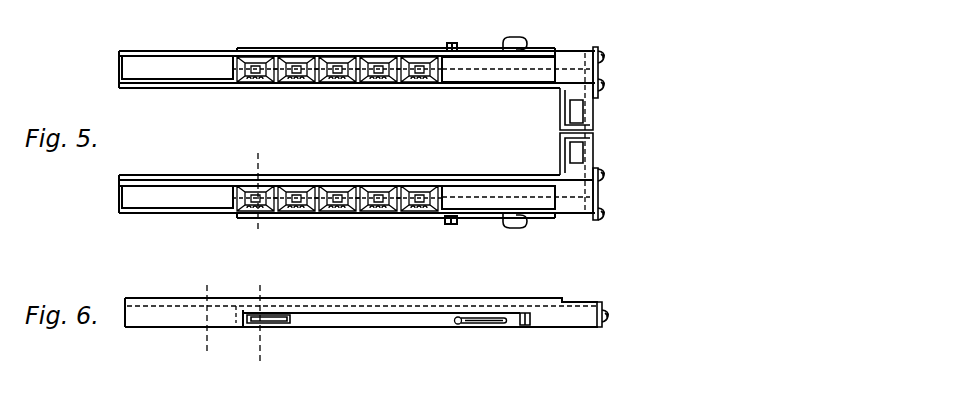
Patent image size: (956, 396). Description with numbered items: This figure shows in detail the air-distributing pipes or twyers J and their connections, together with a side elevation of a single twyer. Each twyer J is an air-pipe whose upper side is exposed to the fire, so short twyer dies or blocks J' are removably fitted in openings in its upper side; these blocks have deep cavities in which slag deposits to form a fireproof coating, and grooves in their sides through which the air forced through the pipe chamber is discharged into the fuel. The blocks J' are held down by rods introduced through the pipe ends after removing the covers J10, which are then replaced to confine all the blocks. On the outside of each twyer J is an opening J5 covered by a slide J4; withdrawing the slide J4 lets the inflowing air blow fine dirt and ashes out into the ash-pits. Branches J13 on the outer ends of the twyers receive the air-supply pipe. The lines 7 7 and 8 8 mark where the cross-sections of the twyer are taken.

In FIG. 5, the air-pipe or twyer J is at (357, 148).
In FIG. 6, the air-pipe or twyer J is at (361, 315).
In FIG. 5, the twyer die or block J' is at (337, 112).
In FIG. 5, the slide J4 is at (505, 234).
In FIG. 6, the slide J4 is at (513, 338).
In FIG. 6, the opening J5 is at (272, 326).
In FIG. 5, the cover J10 is at (621, 194).
In FIG. 6, the cover J10 is at (604, 324).
In FIG. 5, the branch J13 is at (569, 160).
In FIG. 5, the section line 7 7 is at (256, 193).
In FIG. 6, the section line 7 7 is at (258, 328).
In FIG. 6, the section line 8 8 is at (205, 320).